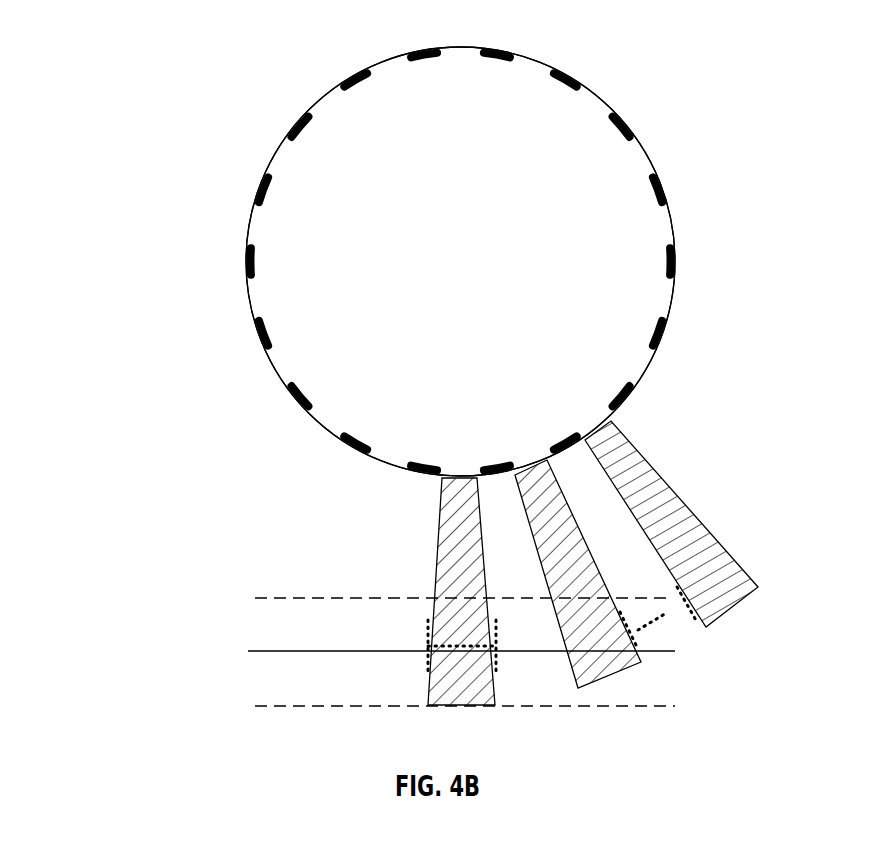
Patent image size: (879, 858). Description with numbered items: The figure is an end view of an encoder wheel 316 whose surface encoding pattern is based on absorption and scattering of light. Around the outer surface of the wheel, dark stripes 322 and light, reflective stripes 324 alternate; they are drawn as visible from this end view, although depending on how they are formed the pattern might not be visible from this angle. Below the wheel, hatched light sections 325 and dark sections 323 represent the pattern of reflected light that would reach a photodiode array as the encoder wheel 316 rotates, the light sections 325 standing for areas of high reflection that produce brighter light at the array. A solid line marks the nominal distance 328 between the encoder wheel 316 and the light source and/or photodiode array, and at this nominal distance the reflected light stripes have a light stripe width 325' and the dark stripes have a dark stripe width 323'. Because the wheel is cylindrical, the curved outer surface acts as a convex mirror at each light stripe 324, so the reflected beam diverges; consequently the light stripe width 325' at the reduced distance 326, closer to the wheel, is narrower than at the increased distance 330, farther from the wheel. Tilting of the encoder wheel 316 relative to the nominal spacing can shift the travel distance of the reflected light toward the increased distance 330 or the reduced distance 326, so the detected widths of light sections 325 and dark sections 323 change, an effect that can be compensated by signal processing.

The encoder wheel 316 is at (315, 343).
The dark stripes 322 is at (623, 122).
The light stripes 324 is at (668, 230).
The dark sections 323 is at (678, 524).
The light sections 325 is at (406, 591).
The dark stripe width 323' is at (678, 641).
The light stripe width 325' is at (403, 643).
The reduced distance 326 is at (255, 598).
The nominal distance 328 is at (248, 651).
The increased distance 330 is at (255, 706).